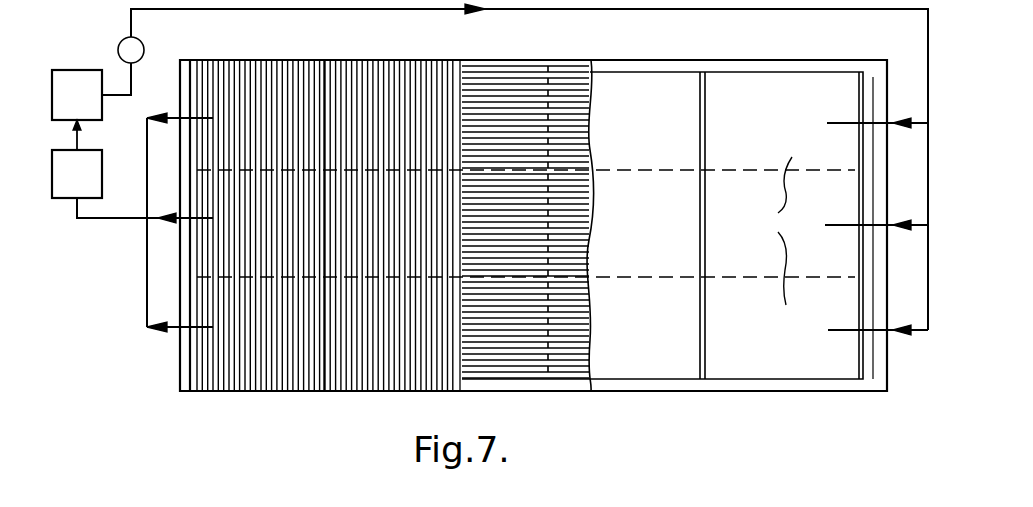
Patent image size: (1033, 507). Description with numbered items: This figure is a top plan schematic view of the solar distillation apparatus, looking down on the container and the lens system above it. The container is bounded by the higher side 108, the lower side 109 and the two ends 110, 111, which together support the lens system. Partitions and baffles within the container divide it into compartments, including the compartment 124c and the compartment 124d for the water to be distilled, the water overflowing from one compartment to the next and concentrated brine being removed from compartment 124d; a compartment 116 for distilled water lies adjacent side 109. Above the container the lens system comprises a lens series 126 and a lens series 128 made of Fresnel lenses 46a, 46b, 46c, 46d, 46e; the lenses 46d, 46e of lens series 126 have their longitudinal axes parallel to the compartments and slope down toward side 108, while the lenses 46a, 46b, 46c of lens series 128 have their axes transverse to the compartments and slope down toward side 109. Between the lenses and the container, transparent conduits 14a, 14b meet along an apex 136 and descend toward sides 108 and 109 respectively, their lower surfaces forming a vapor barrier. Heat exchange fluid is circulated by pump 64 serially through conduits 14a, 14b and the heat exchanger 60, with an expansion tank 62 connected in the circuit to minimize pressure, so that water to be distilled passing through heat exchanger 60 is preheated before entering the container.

The heat exchanger 60 is at (87, 70).
The expansion tank 62 is at (102, 155).
The pump 64 is at (145, 45).
The side 108 is at (190, 192).
The side 109 is at (882, 175).
The end 110 is at (518, 60).
The end 111 is at (603, 393).
The compartment 116 is at (868, 77).
The compartment 124c is at (660, 80).
The compartment 124d is at (797, 88).
The lens series 126 is at (327, 56).
The lens series 128 is at (520, 374).
The apex 136 is at (550, 243).
The transparent conduit 14a is at (415, 295).
The transparent conduit 14b is at (790, 220).
The Fresnel lens 46a is at (583, 118).
The Fresnel lens 46b is at (570, 205).
The Fresnel lens 46c is at (585, 305).
The Fresnel lens 46d is at (285, 60).
The Fresnel lens 46e is at (425, 60).